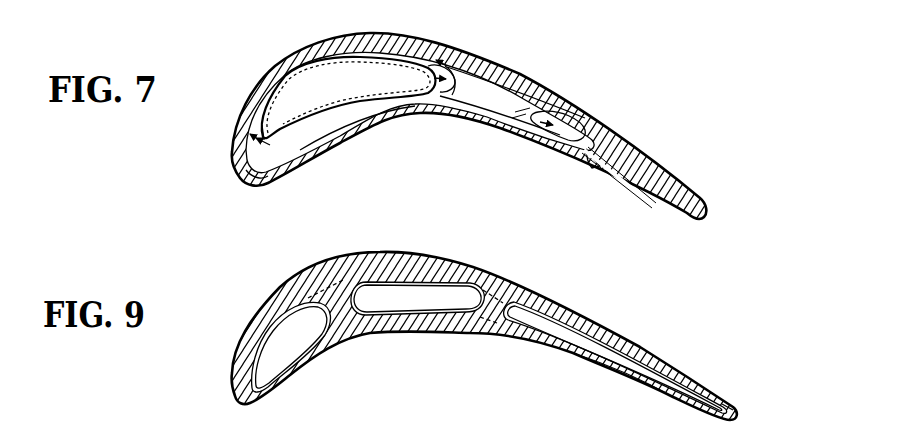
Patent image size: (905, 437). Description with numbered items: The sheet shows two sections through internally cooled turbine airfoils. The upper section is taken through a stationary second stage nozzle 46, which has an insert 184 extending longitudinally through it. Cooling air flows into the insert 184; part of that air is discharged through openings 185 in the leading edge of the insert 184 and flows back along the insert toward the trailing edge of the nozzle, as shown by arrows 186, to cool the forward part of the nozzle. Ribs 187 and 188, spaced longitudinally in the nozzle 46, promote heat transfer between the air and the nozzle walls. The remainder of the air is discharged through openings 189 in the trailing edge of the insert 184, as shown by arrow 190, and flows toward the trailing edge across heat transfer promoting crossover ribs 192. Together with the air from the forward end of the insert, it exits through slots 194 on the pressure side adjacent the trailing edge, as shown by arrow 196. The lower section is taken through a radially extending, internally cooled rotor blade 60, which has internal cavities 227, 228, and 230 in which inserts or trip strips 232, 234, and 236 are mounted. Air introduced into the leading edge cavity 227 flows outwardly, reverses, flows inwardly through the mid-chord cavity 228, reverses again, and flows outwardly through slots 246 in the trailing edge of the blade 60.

In FIG. 7, the second stage nozzle 46 is at (374, 132).
In FIG. 7, the insert 184 is at (330, 67).
In FIG. 7, the openings 185 is at (268, 130).
In FIG. 7, the arrows 186 is at (247, 168).
In FIG. 7, the rib 187 is at (290, 82).
In FIG. 7, the rib 188 is at (318, 125).
In FIG. 7, the openings 189 is at (430, 52).
In FIG. 7, the arrow 190 is at (433, 63).
In FIG. 7, the crossover ribs 192 is at (498, 103).
In FIG. 7, the slots 194 is at (593, 167).
In FIG. 7, the arrow 196 is at (657, 211).
In FIG. 9, the blade 60 is at (277, 275).
In FIG. 9, the leading edge cavity 227 is at (267, 355).
In FIG. 9, the mid-chord cavity 228 is at (407, 284).
In FIG. 9, the cavity 230 is at (543, 318).
In FIG. 9, the insert or trip strip 232 is at (300, 357).
In FIG. 9, the insert or trip strip 234 is at (417, 315).
In FIG. 9, the insert or trip strip 236 is at (567, 343).
In FIG. 9, the slots 246 is at (735, 412).